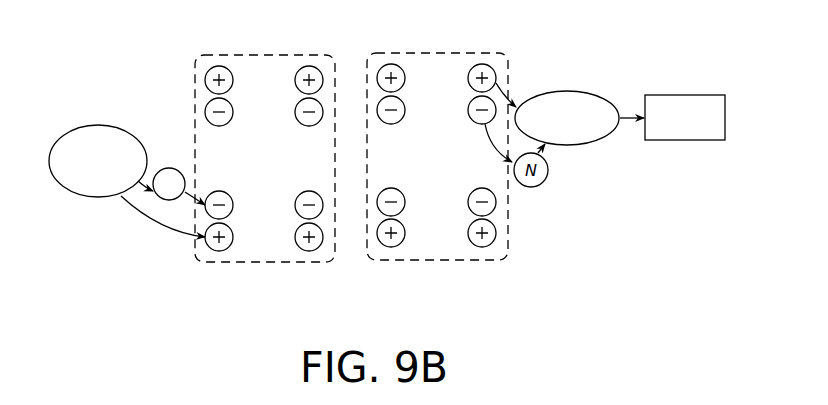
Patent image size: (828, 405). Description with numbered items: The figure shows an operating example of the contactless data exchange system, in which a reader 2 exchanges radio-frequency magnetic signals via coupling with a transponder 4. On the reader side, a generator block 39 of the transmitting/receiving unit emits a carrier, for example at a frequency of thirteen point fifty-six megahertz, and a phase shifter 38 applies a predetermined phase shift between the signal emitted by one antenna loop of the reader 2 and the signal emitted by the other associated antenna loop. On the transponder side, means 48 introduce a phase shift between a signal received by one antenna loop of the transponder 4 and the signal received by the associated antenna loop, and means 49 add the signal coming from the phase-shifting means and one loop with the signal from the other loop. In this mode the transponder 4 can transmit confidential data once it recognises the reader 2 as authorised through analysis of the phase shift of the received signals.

The reader 2 is at (272, 266).
The transponder 4 is at (462, 266).
The phase shifter 38 is at (168, 158).
The generator block 39 is at (95, 187).
The means for introducing a phase shift 48 is at (568, 86).
The means for adding 49 is at (674, 87).